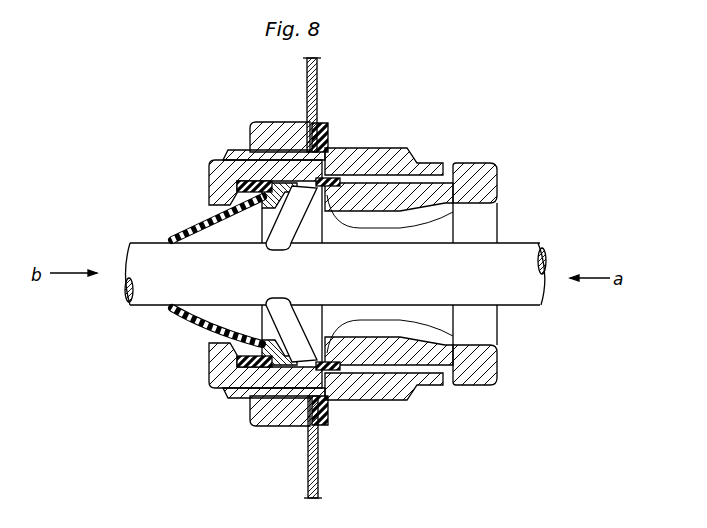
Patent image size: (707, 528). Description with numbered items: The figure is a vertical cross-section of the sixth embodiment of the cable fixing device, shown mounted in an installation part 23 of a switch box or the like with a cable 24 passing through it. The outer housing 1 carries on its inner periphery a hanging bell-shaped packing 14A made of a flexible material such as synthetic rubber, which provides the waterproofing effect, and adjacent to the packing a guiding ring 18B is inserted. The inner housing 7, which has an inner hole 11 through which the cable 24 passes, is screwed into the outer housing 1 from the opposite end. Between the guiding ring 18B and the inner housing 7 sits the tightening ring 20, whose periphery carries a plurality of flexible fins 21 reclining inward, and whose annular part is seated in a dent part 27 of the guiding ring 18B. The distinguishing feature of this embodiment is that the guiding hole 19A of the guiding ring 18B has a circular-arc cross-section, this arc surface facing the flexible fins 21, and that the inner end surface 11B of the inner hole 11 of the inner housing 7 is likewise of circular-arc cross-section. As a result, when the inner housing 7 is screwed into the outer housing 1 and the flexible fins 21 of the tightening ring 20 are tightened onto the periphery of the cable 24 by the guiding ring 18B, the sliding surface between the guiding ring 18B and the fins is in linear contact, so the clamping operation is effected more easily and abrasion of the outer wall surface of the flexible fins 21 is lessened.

The outer housing 1 is at (375, 150).
The inner housing 7 is at (490, 181).
The inner hole 11 is at (487, 227).
The inner end surface 11B is at (455, 188).
The hanging bell-shaped packing 14A is at (170, 318).
The guiding ring 18B is at (252, 420).
The guiding hole 19A is at (212, 392).
The tightening ring 20 is at (340, 413).
The flexible fins 21 is at (338, 368).
The installation part 23 is at (317, 85).
The cable 24 is at (527, 306).
The dent part 27 is at (280, 368).